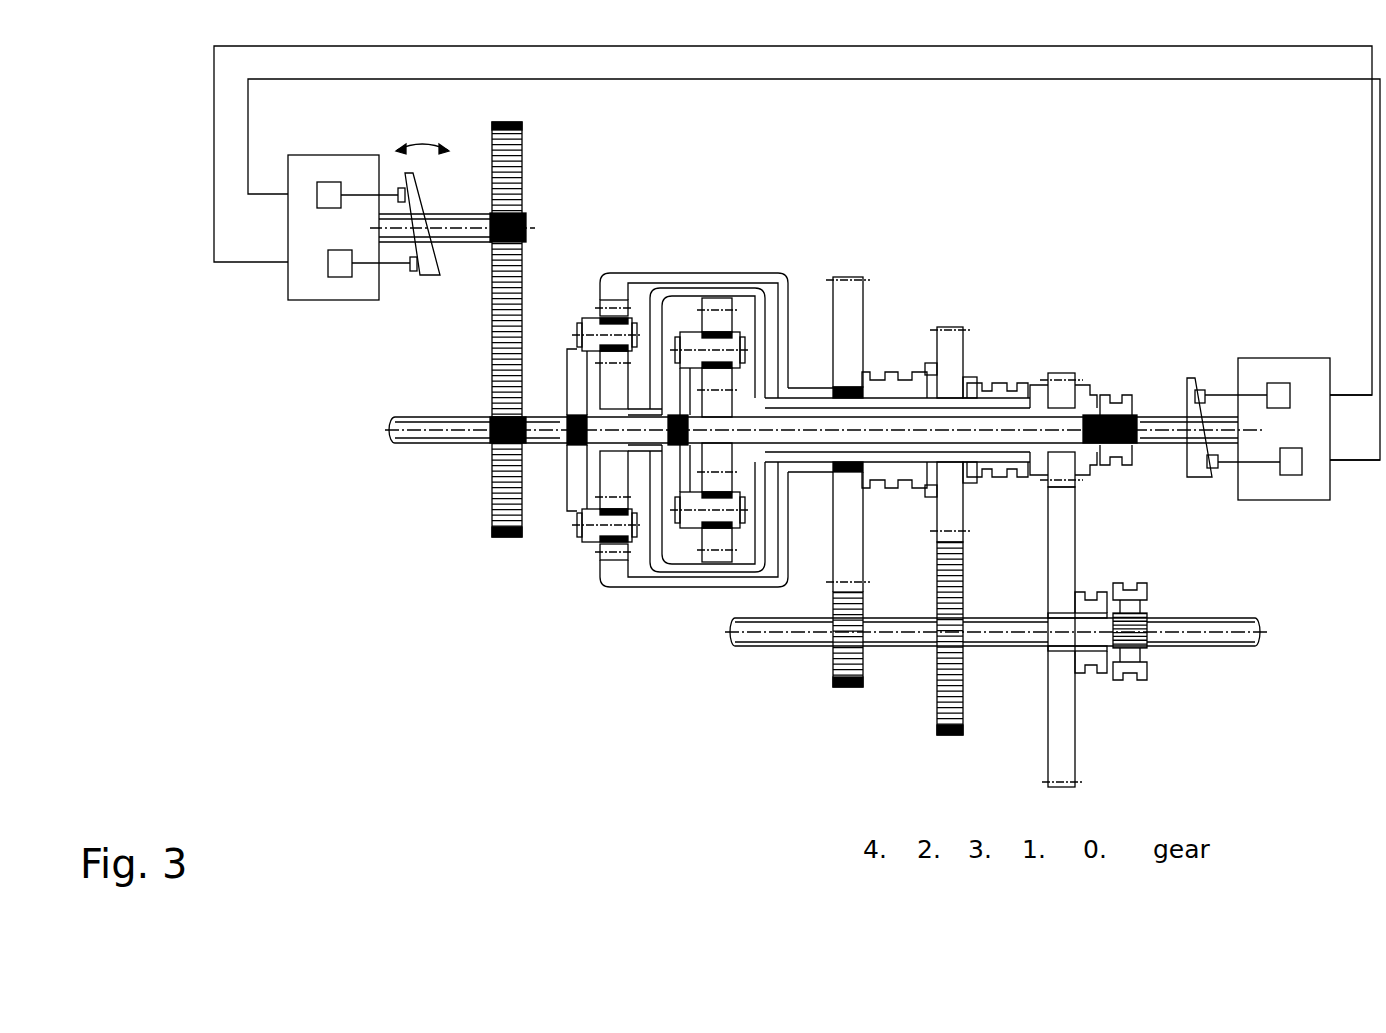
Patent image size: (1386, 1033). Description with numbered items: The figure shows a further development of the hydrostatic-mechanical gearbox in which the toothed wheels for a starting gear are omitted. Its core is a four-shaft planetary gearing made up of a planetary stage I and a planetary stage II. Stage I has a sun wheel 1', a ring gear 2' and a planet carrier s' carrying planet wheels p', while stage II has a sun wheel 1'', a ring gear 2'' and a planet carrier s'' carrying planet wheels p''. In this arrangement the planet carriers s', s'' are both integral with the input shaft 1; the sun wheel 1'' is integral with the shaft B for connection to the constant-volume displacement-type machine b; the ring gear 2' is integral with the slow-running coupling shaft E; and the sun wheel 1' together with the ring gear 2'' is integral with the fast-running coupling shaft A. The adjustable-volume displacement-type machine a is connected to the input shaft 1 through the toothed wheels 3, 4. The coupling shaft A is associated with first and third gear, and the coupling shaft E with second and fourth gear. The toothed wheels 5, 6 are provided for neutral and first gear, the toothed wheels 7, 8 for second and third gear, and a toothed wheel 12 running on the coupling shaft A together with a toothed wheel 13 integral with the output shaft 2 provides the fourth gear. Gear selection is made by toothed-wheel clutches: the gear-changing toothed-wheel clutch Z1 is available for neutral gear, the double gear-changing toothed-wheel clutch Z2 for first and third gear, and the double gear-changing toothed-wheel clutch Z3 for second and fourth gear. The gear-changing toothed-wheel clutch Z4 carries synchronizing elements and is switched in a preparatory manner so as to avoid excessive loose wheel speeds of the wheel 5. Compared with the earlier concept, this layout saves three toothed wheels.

The input shaft 1 is at (823, 451).
The output shaft 2 is at (996, 659).
The toothed wheel 3 is at (502, 537).
The toothed wheel 4 is at (513, 123).
The toothed wheel 5 is at (1072, 370).
The toothed wheel 6 is at (1067, 752).
The toothed wheel 7 is at (955, 347).
The toothed wheel 8 is at (950, 705).
The toothed wheel 12 is at (857, 298).
The toothed wheel 13 is at (840, 688).
The adjustable-volume displacement-type machine a is at (313, 293).
The constant-volume displacement-type machine b is at (1307, 490).
The fast-running coupling shaft A is at (803, 408).
The shaft B is at (1157, 425).
The slow-running coupling shaft E is at (810, 470).
The planetary stage I is at (667, 377).
The planetary stage II is at (707, 369).
The sun wheel 1' is at (628, 430).
The sun wheel 1'' is at (728, 430).
The ring gear 2' is at (691, 414).
The ring gear 2'' is at (707, 406).
The planet wheels p' is at (602, 414).
The planet wheels p'' is at (710, 414).
The planet carrier s' is at (566, 430).
The planet carrier s'' is at (677, 464).
The gear-changing toothed-wheel clutch Z1 is at (1110, 401).
The double gear-changing toothed-wheel clutch Z2 is at (997, 392).
The double gear-changing toothed-wheel clutch Z3 is at (894, 398).
The gear-changing toothed-wheel clutch Z4 is at (1132, 606).